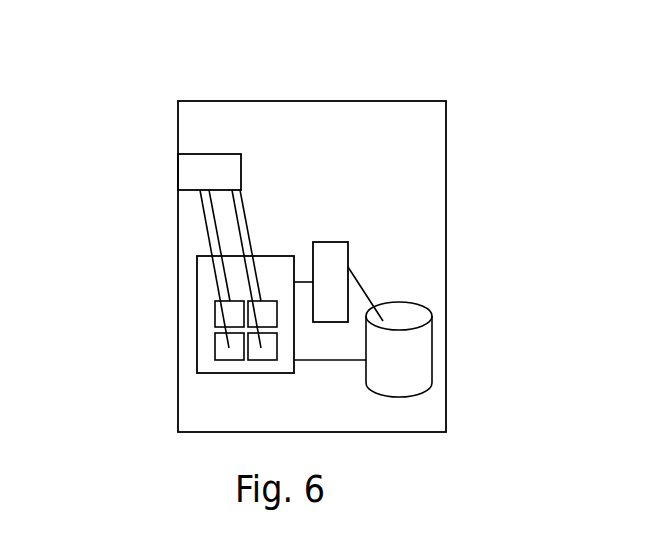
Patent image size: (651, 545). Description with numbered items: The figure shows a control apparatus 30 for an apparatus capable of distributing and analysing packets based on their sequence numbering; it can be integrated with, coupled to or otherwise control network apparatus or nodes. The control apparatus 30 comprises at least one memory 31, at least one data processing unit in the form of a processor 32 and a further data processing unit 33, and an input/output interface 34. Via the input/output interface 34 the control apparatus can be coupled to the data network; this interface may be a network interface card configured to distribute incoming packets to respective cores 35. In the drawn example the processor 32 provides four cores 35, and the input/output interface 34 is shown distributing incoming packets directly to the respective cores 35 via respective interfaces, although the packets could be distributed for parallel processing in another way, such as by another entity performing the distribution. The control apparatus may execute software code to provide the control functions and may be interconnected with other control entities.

The control apparatus 30 is at (197, 123).
The memory 31 is at (407, 372).
The processor 32 is at (197, 281).
The data processing unit 33 is at (322, 263).
The input/output interface 34 is at (197, 177).
The cores 35 is at (215, 336).